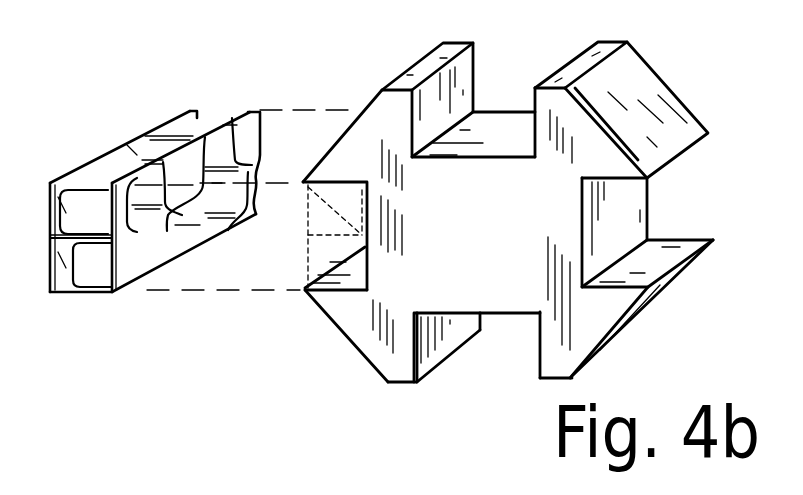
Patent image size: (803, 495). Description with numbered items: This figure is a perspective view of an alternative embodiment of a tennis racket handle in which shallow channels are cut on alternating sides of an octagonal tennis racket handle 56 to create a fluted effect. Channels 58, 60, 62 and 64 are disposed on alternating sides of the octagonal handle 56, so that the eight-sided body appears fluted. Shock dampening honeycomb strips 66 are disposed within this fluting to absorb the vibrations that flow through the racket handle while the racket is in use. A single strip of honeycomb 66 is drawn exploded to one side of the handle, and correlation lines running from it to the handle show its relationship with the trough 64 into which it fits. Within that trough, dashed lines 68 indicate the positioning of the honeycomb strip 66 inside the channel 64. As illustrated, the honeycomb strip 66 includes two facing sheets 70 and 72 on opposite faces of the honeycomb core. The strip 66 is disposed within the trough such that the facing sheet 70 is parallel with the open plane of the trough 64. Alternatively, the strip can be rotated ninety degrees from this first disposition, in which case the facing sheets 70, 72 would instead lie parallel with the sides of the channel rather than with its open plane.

The octagonal tennis racket handle 56 is at (648, 332).
The channel 58 is at (490, 125).
The channel 60 is at (633, 202).
The channel 62 is at (451, 339).
The channel (trough) 64 is at (336, 181).
The shock dampening honeycomb strip 66 is at (90, 202).
The dashed lines 68 is at (305, 258).
The facing sheet 70 is at (50, 292).
The facing sheet 72 is at (131, 240).